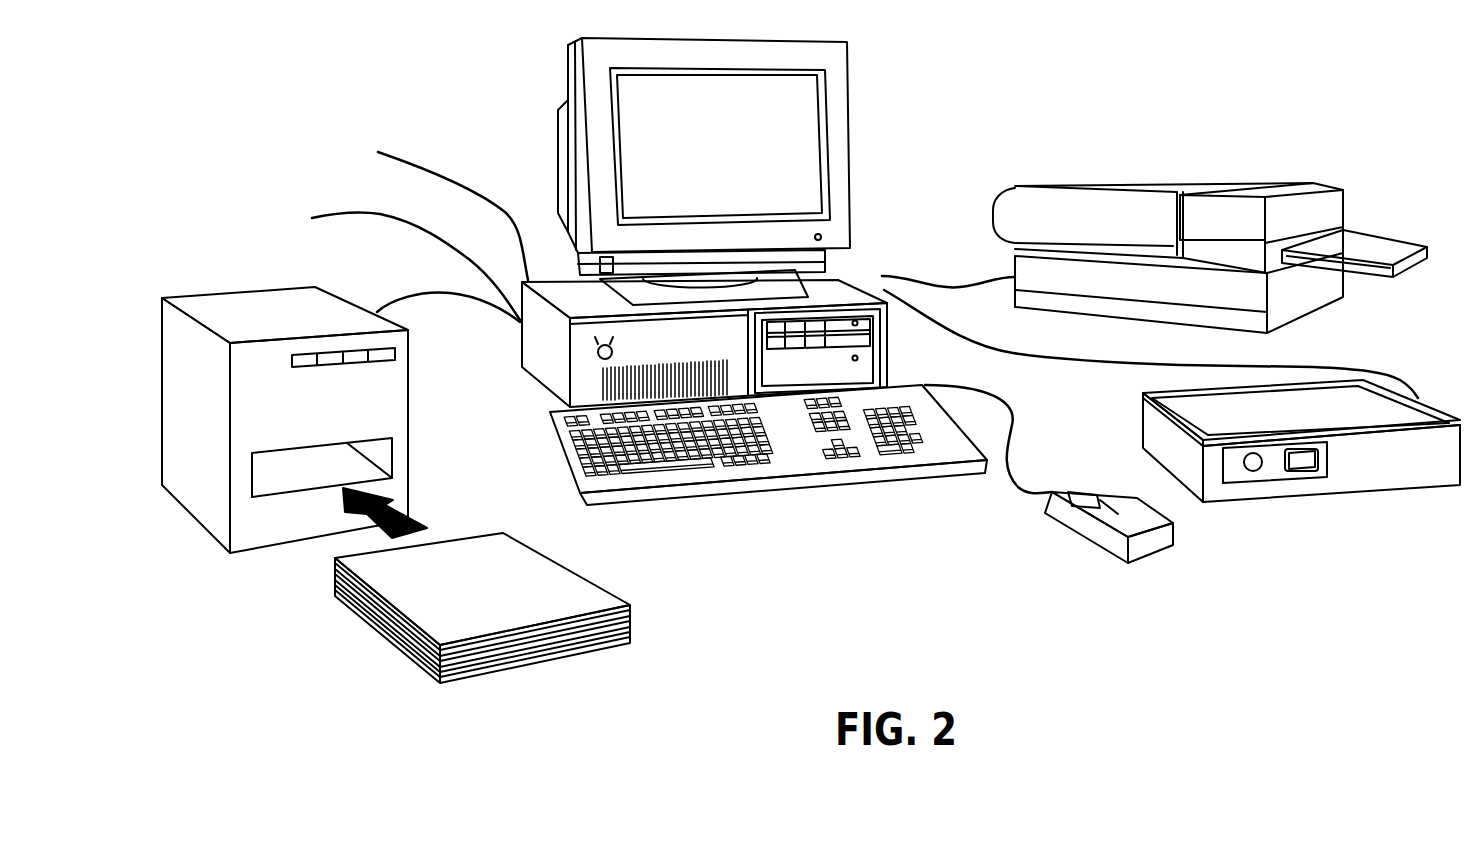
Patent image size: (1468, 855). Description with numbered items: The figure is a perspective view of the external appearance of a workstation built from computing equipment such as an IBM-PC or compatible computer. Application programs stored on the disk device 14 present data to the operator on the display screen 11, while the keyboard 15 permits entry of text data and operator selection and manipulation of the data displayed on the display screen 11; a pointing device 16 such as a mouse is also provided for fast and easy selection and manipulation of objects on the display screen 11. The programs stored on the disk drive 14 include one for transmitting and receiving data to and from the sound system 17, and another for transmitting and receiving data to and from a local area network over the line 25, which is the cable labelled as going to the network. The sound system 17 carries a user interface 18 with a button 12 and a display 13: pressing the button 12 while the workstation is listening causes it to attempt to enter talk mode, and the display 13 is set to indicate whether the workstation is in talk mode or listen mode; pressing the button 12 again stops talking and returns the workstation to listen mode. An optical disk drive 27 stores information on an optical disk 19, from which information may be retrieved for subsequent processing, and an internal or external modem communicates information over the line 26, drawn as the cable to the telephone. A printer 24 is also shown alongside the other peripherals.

The display screen 11 is at (745, 38).
The button 12 is at (1305, 470).
The display 13 is at (1252, 471).
The disk device 14 is at (843, 345).
The keyboard 15 is at (653, 480).
The pointing device 16 is at (1143, 558).
The sound system 17 is at (1417, 400).
The user interface 18 is at (1330, 462).
The optical disk 19 is at (383, 637).
The printer 24 is at (1130, 183).
The line 25 is at (487, 198).
The line 26 is at (375, 217).
The optical disk drive 27 is at (213, 528).